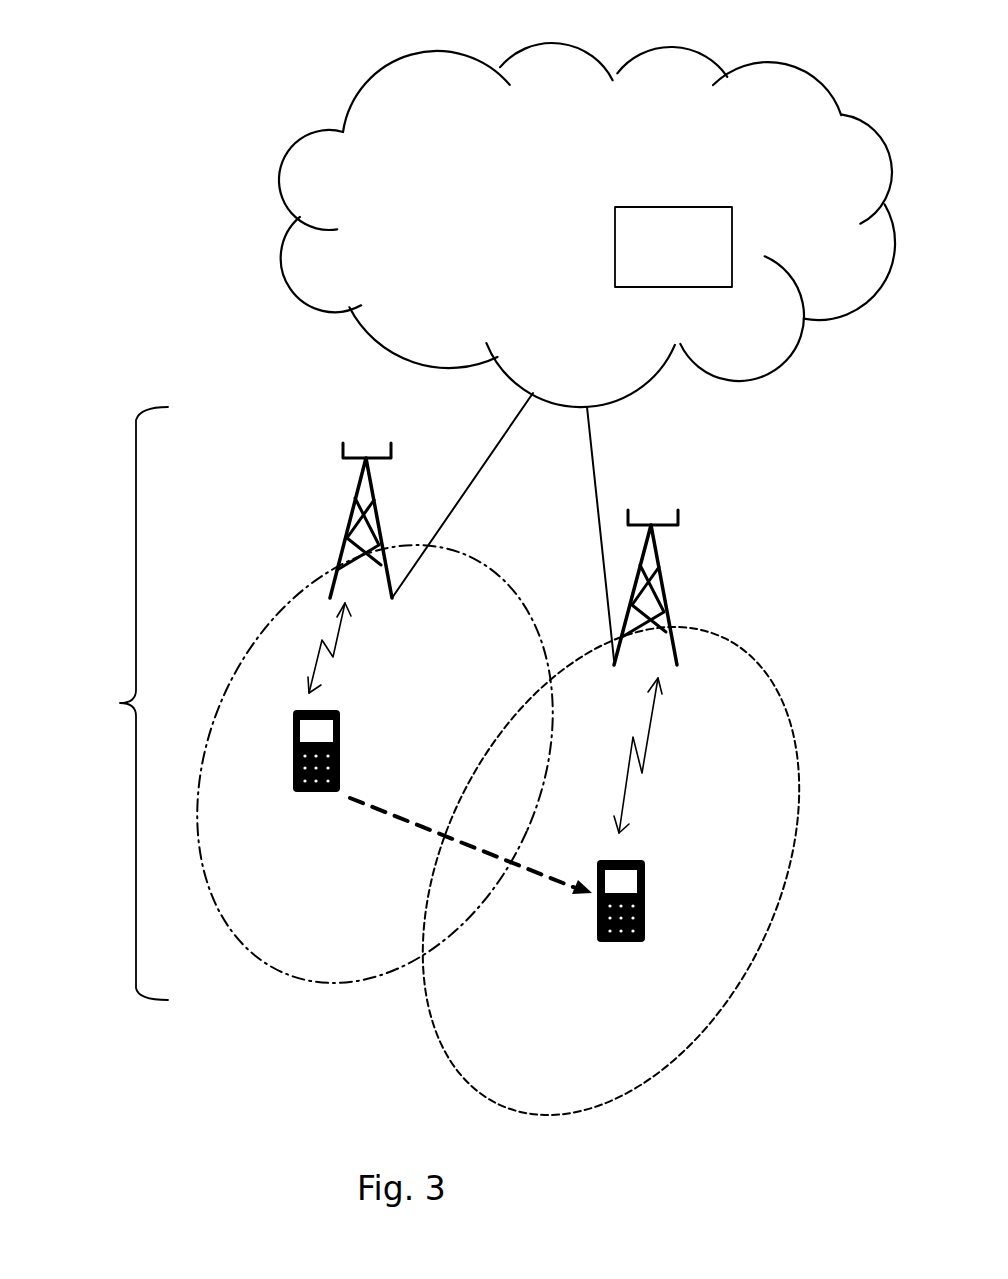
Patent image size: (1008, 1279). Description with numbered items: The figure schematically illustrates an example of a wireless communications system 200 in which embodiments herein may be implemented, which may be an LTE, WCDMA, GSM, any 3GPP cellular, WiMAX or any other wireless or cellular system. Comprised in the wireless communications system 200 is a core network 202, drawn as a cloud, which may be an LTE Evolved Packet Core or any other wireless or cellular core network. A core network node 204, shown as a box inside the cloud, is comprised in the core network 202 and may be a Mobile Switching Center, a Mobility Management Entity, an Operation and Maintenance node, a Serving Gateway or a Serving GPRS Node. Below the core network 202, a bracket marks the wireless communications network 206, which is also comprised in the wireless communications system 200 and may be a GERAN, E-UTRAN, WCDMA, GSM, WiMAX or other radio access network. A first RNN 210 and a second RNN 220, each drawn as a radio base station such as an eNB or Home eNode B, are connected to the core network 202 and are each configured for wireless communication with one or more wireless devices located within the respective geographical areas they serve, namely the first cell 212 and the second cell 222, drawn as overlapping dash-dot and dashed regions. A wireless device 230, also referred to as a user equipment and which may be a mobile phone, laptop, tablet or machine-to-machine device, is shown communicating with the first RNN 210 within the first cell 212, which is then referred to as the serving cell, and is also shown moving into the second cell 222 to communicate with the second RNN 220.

The wireless communications system 200 is at (222, 298).
The core network 202 is at (293, 149).
The core network node 204 is at (676, 207).
The wireless communications network 206 is at (120, 703).
The first RNN 210 is at (346, 531).
The first cell 212 is at (282, 607).
The second RNN 220 is at (663, 573).
The second cell 222 is at (741, 652).
The wireless device 230 is at (345, 772).